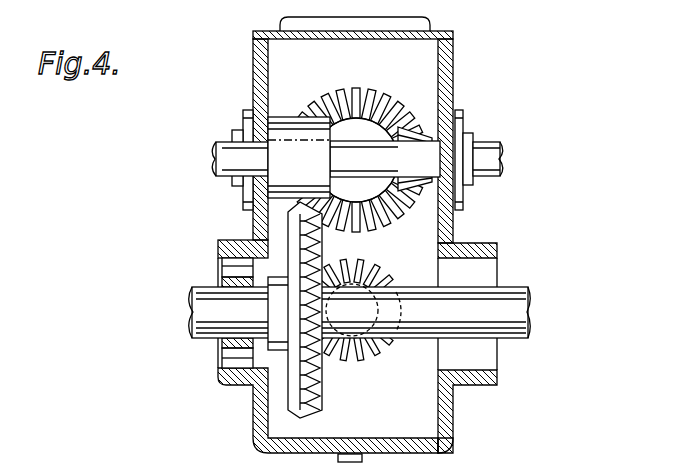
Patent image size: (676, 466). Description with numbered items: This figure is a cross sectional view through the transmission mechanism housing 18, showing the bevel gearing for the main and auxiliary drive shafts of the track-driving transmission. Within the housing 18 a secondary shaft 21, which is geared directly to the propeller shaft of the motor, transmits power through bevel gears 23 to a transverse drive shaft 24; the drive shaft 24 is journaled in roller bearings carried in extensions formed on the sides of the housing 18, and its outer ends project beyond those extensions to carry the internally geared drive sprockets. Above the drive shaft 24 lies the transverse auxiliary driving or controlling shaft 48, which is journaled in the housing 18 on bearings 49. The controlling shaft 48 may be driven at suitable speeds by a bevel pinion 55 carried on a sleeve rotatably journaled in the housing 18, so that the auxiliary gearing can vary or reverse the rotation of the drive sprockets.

The transmission mechanism housing 18 is at (454, 77).
The bevel pinion 55 is at (358, 147).
The bearings 49 is at (299, 157).
The controlling shaft 48 is at (500, 166).
The transverse drive shaft 24 is at (360, 311).
The secondary shaft 21 is at (358, 313).
The bevel gears 23 is at (358, 338).